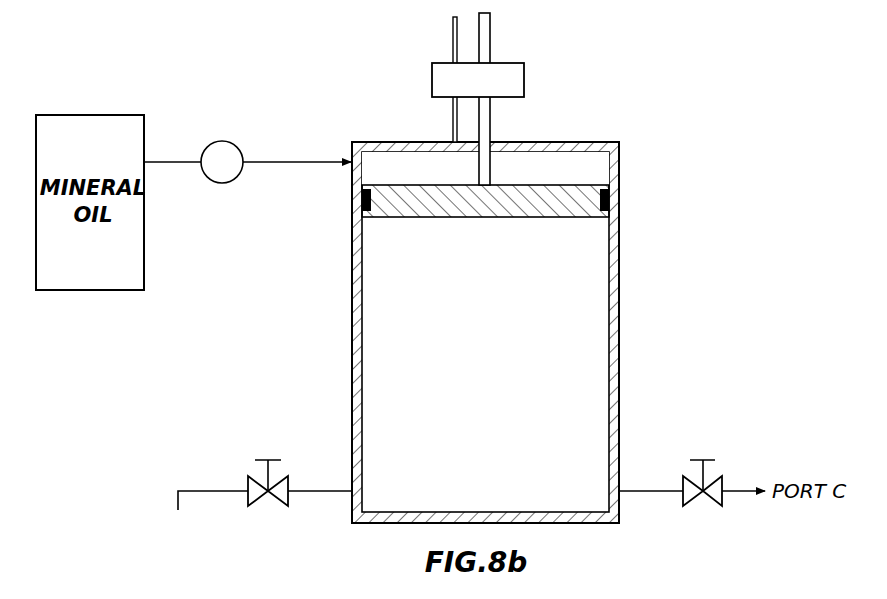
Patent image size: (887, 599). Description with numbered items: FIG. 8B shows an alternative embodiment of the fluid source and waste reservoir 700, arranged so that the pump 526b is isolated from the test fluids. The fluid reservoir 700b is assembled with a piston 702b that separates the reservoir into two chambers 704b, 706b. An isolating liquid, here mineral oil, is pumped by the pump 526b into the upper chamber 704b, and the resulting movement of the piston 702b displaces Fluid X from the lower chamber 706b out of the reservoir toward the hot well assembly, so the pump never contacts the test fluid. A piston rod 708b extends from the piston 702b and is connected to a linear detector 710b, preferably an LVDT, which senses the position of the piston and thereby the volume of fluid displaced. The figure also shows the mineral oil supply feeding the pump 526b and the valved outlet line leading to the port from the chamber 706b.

The pump 526b is at (218, 141).
The vessel 700 is at (486, 268).
The fluid reservoir 700b is at (620, 265).
The piston 702b is at (593, 195).
The chamber 704b is at (595, 165).
The chamber 706b is at (585, 295).
The piston rod 708b is at (492, 127).
The linear detector 710b is at (524, 76).